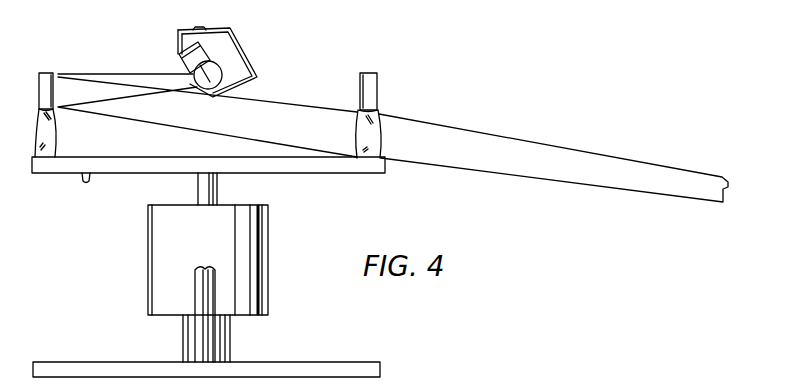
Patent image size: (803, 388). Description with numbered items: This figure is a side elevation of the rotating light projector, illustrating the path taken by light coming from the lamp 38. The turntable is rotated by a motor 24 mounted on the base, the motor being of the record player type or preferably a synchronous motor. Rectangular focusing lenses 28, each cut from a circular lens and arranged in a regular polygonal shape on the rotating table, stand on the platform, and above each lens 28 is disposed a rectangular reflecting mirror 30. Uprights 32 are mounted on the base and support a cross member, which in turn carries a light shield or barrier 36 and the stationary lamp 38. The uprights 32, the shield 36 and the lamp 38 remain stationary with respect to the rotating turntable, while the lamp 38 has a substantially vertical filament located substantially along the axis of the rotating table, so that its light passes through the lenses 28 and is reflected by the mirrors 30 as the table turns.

The motor 24 is at (258, 263).
The rectangular focusing lens 28 is at (378, 129).
The rectangular reflecting mirror 30 is at (80, 50).
The upright 32 is at (202, 302).
The light shield 36 is at (255, 23).
The lamp 38 is at (181, 62).